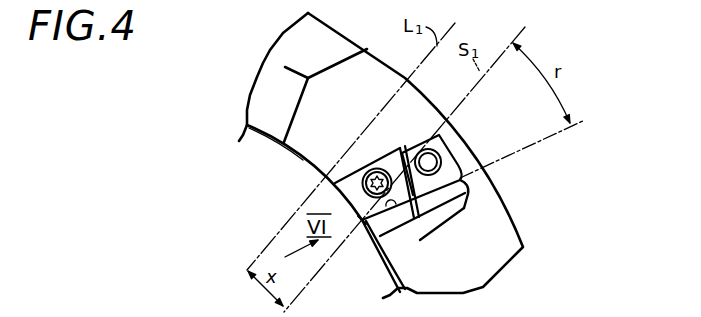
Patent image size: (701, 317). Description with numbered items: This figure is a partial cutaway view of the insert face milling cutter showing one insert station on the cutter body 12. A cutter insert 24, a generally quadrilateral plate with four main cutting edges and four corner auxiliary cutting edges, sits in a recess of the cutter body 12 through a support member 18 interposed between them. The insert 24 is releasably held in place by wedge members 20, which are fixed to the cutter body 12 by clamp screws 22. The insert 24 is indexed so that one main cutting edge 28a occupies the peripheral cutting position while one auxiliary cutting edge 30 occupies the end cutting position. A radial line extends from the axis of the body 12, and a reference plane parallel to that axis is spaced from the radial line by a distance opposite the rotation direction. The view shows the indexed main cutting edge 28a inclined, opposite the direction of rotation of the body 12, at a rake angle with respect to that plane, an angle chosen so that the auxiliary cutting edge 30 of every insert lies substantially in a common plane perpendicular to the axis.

The cutter body 12 is at (353, 38).
The support member 18 is at (462, 210).
The wedge member 20 is at (366, 170).
The clamp screw 22 is at (360, 172).
The cutter insert 24 is at (368, 236).
The main cutting edge 28a is at (421, 241).
The auxiliary cutting edge 30 is at (360, 220).